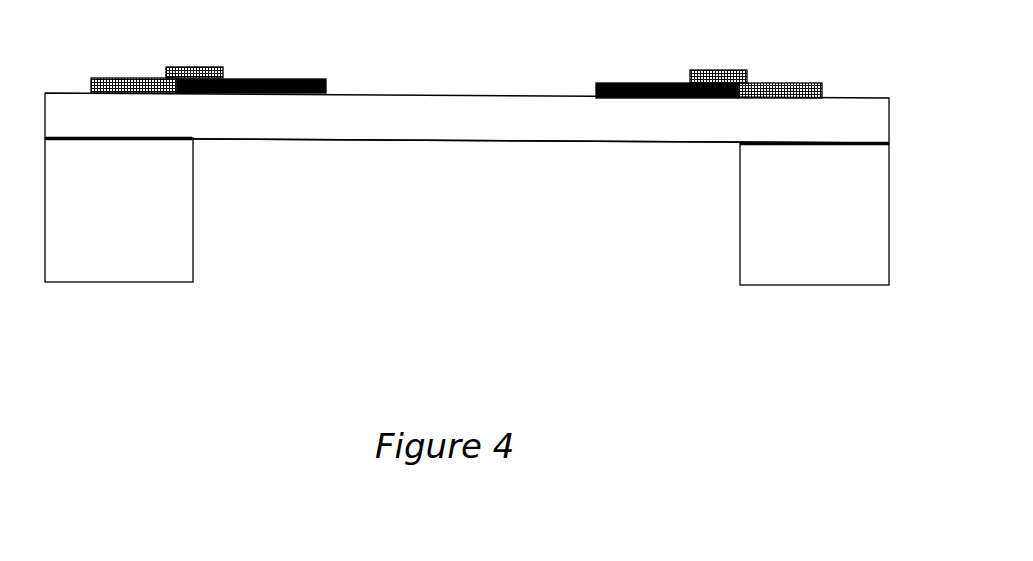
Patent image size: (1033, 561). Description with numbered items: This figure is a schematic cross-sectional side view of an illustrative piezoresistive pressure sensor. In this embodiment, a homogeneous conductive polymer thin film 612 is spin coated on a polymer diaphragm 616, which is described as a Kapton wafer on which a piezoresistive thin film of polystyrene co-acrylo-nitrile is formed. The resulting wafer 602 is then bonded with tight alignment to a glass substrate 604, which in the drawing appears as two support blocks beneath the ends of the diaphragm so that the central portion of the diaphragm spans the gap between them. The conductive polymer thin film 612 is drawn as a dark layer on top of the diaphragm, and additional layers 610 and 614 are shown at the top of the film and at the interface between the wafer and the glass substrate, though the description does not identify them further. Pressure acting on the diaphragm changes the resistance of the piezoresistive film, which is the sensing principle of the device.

The wafer 602 is at (853, 103).
The glass substrate 604 is at (753, 228).
The electrode layer 610 is at (778, 83).
The homogeneous conductive polymer thin film 612 is at (267, 79).
The bonding layer 614 is at (167, 140).
The polymer diaphragm 616 is at (517, 137).